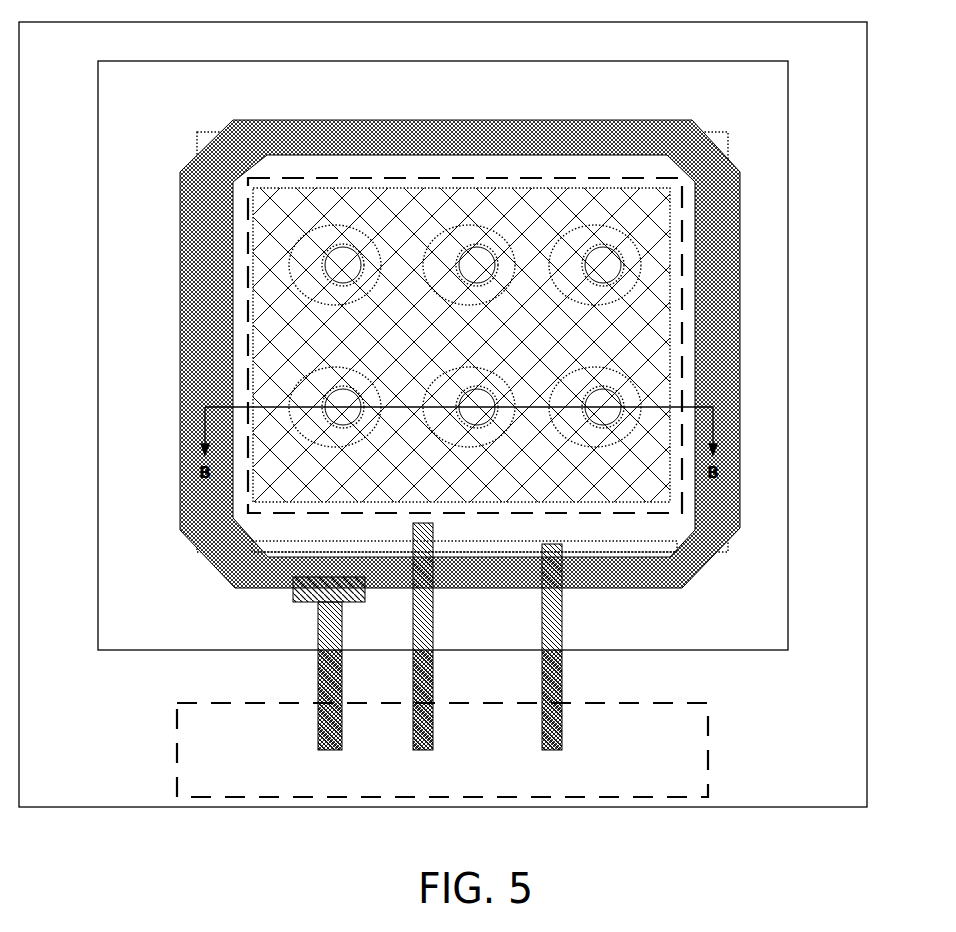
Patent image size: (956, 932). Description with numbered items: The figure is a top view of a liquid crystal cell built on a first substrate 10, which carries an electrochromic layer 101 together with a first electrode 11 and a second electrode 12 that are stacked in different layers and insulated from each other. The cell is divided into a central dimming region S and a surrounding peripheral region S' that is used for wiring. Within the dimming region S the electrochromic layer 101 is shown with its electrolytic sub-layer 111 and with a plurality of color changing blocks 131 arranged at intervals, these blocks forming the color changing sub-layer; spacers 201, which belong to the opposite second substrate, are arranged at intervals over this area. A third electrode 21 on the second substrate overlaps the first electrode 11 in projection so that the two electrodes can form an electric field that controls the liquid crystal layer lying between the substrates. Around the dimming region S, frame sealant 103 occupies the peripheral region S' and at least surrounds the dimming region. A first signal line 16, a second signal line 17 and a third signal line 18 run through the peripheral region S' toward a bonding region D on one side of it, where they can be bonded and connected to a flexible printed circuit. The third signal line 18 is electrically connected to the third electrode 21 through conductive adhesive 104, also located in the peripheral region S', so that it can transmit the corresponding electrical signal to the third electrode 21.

The first substrate 10 is at (867, 155).
The third electrode 21 is at (778, 513).
The second electrode 12 is at (593, 547).
The frame sealant 103 is at (243, 590).
The first electrode 11 is at (620, 523).
The peripheral region S' is at (578, 345).
The dimming region S is at (506, 345).
The electrolytic sub-layer 111 is at (658, 283).
The color changing blocks 131 is at (622, 262).
The spacers 201 is at (604, 262).
The electrochromic layer 101 is at (814, 240).
The conductive adhesive 104 is at (355, 604).
The third signal line 18 is at (342, 722).
The first signal line 16 is at (433, 720).
The second signal line 17 is at (562, 722).
The bonding region D is at (690, 765).